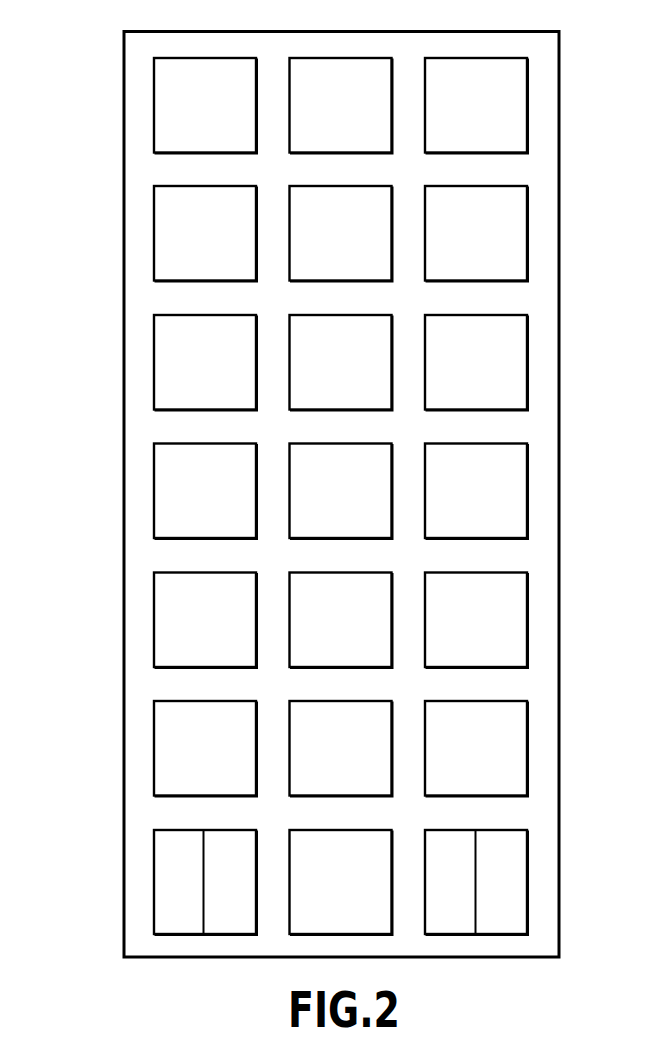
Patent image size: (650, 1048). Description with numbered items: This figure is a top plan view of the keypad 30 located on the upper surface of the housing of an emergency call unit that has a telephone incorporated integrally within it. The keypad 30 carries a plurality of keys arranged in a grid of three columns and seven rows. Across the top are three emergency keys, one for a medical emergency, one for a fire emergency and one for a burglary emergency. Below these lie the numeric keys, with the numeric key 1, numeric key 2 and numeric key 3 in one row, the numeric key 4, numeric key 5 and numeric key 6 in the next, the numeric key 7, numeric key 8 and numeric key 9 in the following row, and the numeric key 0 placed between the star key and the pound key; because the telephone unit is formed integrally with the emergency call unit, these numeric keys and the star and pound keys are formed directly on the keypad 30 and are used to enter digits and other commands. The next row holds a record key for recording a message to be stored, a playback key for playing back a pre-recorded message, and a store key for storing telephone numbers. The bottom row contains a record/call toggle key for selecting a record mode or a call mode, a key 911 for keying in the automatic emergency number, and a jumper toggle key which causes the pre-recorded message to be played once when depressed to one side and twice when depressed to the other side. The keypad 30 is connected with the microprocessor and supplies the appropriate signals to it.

The keypad 30 is at (117, 293).
The numeric key 1 is at (205, 233).
The numeric key 2 is at (341, 233).
The numeric key 3 is at (476, 233).
The numeric key 4 is at (205, 362).
The numeric key 5 is at (341, 362).
The numeric key 6 is at (476, 362).
The numeric key 7 is at (205, 491).
The numeric key 8 is at (341, 491).
The numeric key 9 is at (476, 491).
The numeric key 0 is at (341, 620).
The emergency number key 911 is at (341, 882).